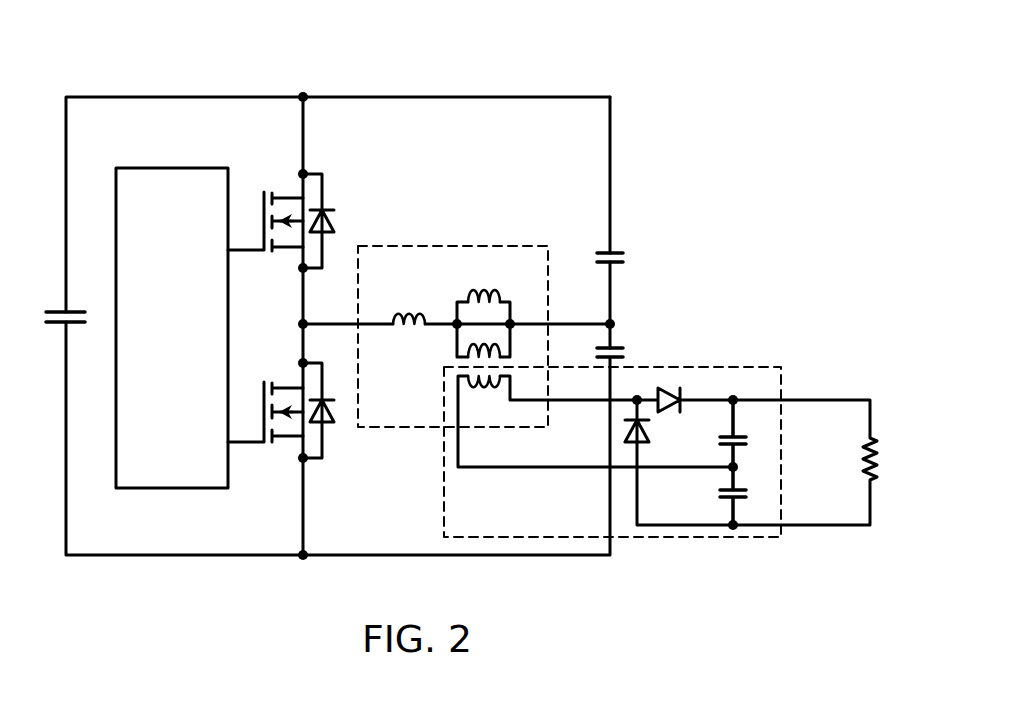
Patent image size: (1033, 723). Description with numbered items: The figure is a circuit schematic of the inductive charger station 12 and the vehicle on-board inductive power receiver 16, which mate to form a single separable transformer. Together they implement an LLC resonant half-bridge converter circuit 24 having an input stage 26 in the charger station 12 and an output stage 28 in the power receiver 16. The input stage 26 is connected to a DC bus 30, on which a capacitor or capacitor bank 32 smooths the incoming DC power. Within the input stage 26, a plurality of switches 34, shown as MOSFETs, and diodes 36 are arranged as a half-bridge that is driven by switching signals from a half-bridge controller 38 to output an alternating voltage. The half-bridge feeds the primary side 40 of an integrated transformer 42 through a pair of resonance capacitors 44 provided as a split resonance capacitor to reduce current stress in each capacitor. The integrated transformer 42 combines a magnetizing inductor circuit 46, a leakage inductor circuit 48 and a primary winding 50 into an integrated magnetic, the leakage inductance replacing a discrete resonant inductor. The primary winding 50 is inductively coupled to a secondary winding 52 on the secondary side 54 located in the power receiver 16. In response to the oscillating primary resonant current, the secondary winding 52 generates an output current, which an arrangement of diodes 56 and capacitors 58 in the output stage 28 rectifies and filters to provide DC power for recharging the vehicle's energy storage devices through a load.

The inductive charger station 12 is at (395, 51).
The inductive power receiver 16 is at (660, 562).
The LLC resonant half-bridge converter circuit 24 is at (524, 123).
The input stage 26 is at (265, 78).
The output stage 28 is at (817, 544).
The DC bus 30 is at (115, 97).
The capacitor or capacitor bank 32 is at (57, 336).
The switches 34 is at (284, 191).
The diodes 36 is at (335, 224).
The half-bridge controller 38 is at (170, 488).
The primary side 40 is at (526, 347).
The integrated transformer 42 is at (422, 241).
The resonance capacitors 44 is at (625, 357).
The magnetizing inductor circuit 46 is at (503, 293).
The leakage inductor circuit 48 is at (393, 314).
The primary winding 50 is at (458, 350).
The secondary winding 52 is at (485, 386).
The secondary side 54 is at (524, 381).
The diodes 56 is at (668, 397).
The capacitors 58 is at (746, 495).